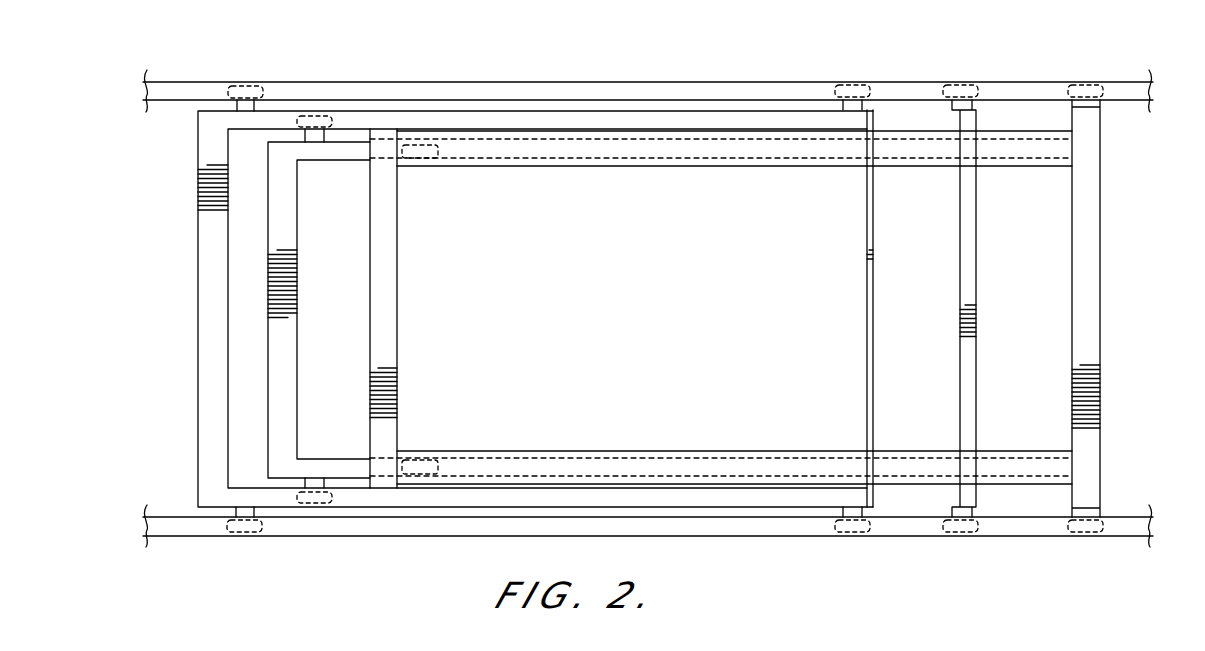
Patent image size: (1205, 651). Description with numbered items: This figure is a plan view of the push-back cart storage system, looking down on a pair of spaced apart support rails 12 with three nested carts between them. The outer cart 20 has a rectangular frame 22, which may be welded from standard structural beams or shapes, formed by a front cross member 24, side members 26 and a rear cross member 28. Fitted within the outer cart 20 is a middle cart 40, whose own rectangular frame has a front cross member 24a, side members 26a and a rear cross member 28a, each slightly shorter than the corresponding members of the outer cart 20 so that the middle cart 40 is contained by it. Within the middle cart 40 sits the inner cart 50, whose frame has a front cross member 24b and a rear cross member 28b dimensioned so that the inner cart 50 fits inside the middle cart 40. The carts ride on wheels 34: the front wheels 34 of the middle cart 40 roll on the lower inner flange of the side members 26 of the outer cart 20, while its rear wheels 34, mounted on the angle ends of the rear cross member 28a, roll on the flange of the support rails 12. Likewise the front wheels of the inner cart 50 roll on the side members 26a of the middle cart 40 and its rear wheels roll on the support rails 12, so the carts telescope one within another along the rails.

The support rails 12 is at (323, 93).
The outer cart 20 is at (198, 310).
The rectangular frame 22 is at (418, 110).
The front cross member 24 is at (212, 263).
The front cross member 24a is at (295, 230).
The front cross member 24b is at (383, 257).
The side members 26 is at (485, 120).
The side members 26a is at (505, 468).
The rear cross member 28 is at (873, 216).
The rear cross member 28a is at (968, 240).
The rear cross member 28b is at (1100, 316).
The wheels 34 is at (245, 93).
The middle cart 40 is at (267, 368).
The inner cart 50 is at (368, 298).